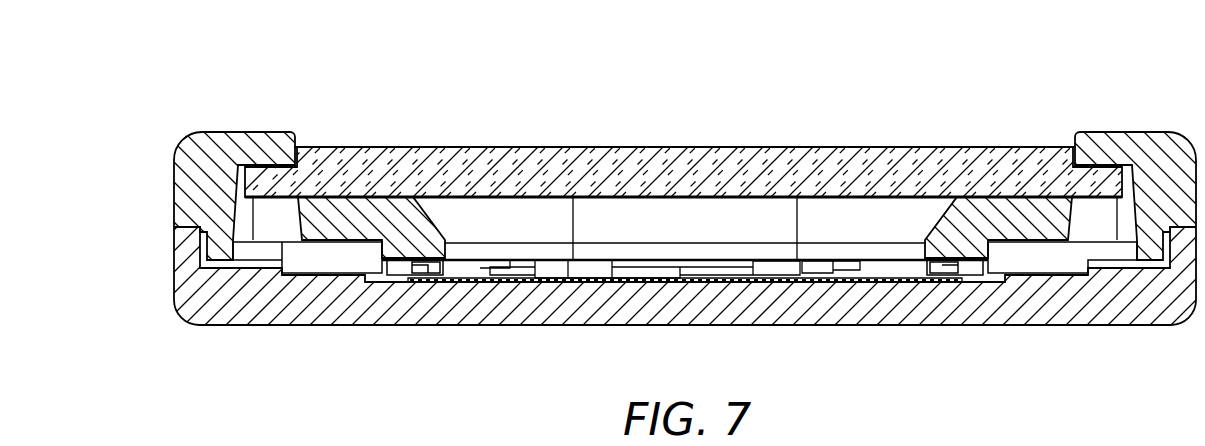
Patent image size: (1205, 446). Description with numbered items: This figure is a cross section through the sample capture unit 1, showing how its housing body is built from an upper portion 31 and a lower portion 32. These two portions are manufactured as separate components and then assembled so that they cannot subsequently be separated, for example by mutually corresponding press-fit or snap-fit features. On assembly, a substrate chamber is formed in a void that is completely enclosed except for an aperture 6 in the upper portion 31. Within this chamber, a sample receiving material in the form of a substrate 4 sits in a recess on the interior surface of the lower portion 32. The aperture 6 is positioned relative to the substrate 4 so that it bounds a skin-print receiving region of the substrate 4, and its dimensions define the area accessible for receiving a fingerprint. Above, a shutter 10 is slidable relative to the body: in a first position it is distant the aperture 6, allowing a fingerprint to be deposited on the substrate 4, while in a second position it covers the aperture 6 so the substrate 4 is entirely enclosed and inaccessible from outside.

The sample capture unit 1 is at (343, 68).
The substrate 4 is at (688, 275).
The aperture 6 is at (840, 222).
The shutter 10 is at (504, 151).
The upper portion 31 is at (1131, 140).
The lower portion 32 is at (1133, 315).